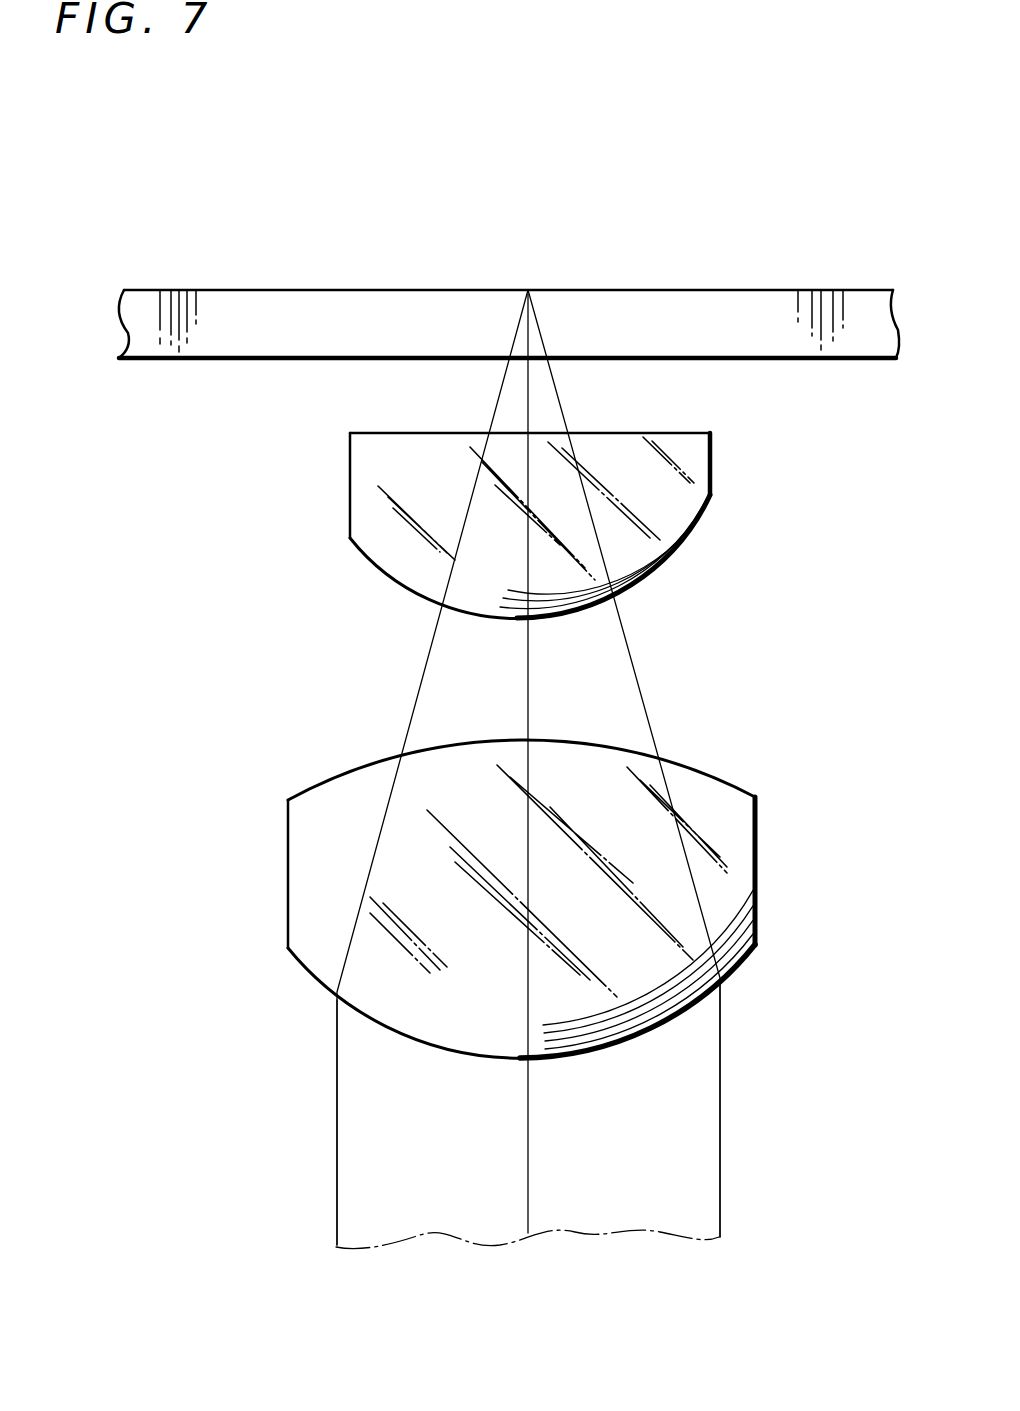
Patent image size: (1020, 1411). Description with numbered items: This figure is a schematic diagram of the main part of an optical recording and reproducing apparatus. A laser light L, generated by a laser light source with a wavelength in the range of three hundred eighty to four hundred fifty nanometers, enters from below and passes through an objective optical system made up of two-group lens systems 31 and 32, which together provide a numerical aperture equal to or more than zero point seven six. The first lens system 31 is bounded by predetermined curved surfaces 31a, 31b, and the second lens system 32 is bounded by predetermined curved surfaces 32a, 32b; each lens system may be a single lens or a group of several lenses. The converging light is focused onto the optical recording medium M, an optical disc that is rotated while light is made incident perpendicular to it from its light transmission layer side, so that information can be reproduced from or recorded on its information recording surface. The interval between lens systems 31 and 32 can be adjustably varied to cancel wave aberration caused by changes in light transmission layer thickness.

The optical recording medium M is at (763, 293).
The second lens system 32 is at (588, 497).
The curved surface of lens system 32 32a is at (687, 563).
The curved surface of lens system 32 32b is at (650, 432).
The first lens system 31 is at (588, 896).
The curved surface of lens system 31 31a is at (707, 997).
The curved surface of lens system 31 31b is at (723, 780).
The laser light L is at (722, 1183).